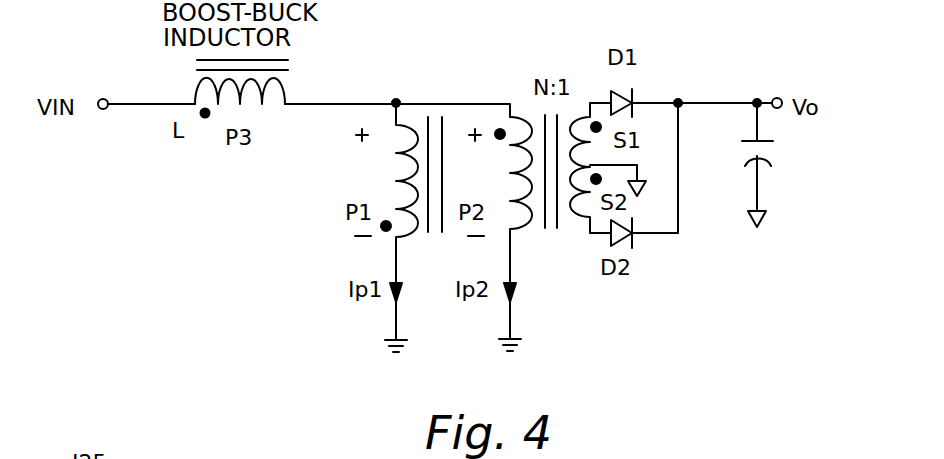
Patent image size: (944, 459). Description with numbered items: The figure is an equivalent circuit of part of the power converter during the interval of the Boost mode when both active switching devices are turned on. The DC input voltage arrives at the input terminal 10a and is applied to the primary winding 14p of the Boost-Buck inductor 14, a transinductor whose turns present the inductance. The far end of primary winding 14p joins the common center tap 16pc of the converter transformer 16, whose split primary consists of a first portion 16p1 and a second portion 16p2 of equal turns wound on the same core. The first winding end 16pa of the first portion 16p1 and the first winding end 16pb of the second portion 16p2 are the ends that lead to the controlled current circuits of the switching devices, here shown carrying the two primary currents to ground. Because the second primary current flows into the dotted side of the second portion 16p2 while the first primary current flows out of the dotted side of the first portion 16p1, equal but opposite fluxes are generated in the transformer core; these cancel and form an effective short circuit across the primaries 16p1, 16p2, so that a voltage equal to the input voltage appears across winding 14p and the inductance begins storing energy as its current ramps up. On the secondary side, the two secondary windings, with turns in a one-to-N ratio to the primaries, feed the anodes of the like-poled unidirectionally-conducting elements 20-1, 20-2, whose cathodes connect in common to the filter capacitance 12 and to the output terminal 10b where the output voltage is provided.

The input terminal 10a is at (146, 88).
The output terminal 10b is at (776, 97).
The filter capacitance 12 is at (762, 166).
The Boost-Buck inductor 14 is at (280, 82).
The primary winding 14p is at (266, 102).
The converter transformer 16 is at (459, 165).
The common center tap 16pc is at (400, 101).
The first portion of split primary 16p1 is at (374, 193).
The second portion of split primary 16p2 is at (493, 200).
The first winding end 16pa is at (393, 322).
The first winding end of second portion 16pb is at (508, 322).
The unidirectionally-conducting element 20-1 is at (622, 90).
The unidirectionally-conducting element 20-2 is at (622, 246).